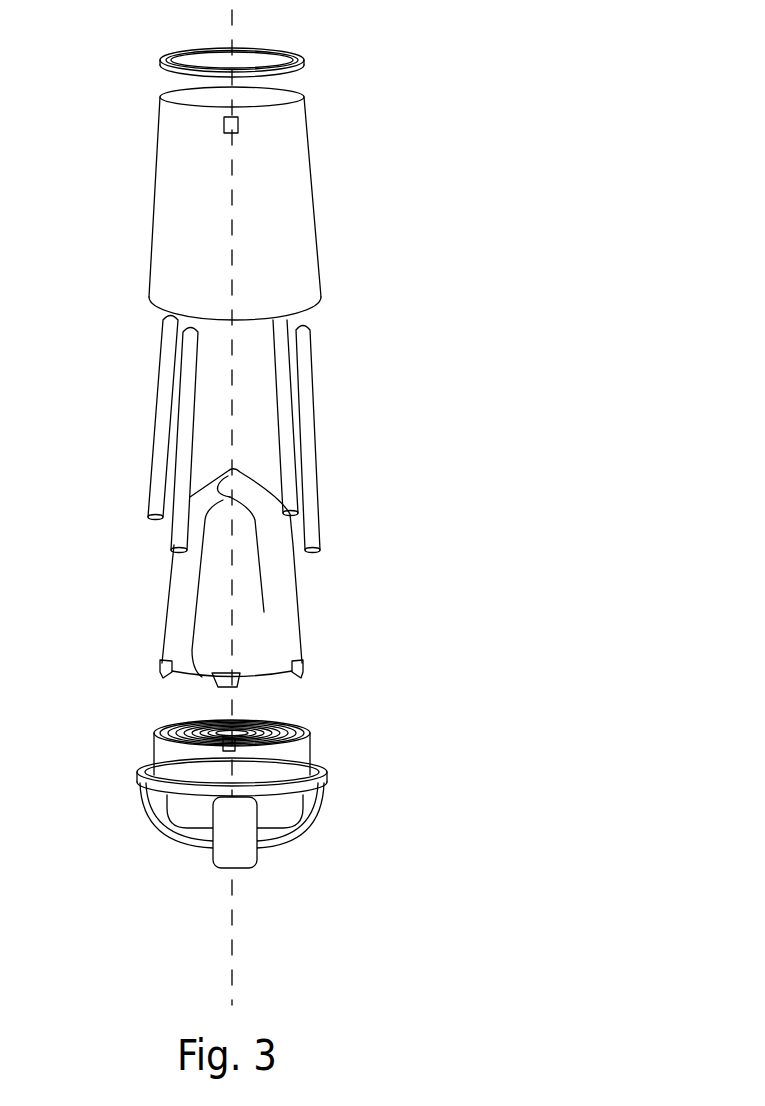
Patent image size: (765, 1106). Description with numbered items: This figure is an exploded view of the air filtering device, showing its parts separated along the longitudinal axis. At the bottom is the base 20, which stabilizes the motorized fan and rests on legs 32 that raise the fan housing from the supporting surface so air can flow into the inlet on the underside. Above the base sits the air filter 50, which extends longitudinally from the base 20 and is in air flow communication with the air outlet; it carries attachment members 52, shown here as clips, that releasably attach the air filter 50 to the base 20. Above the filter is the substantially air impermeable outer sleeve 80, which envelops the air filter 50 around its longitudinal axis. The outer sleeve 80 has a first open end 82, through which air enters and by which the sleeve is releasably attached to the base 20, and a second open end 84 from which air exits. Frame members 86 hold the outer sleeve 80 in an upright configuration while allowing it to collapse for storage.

The base 20 is at (130, 728).
The legs 32 is at (327, 791).
The air filter 50 is at (280, 592).
The attachment member 52 is at (300, 666).
The outer sleeve 80 is at (303, 199).
The first open end 82 is at (250, 331).
The second open end 84 is at (254, 102).
The frame 86 is at (312, 477).